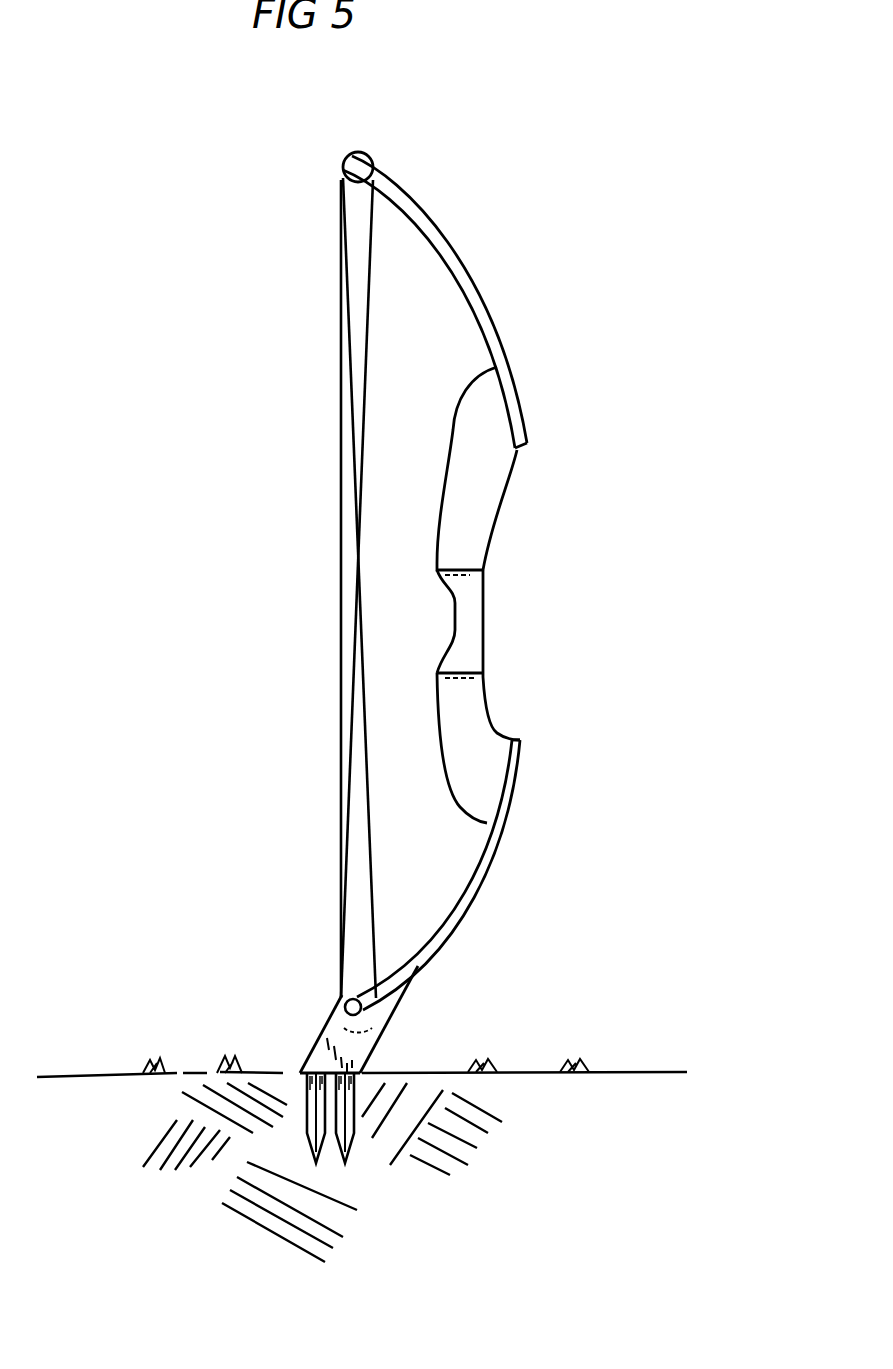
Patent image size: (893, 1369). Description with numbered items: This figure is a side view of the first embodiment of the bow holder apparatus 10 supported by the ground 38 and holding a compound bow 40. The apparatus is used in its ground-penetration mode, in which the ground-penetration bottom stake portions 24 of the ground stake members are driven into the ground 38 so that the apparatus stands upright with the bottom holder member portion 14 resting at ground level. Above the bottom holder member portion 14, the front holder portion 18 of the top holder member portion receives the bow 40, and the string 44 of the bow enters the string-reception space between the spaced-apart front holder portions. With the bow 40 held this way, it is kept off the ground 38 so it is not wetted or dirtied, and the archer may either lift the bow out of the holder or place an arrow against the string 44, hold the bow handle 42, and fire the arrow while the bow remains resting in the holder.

The bow holder apparatus 10 is at (312, 998).
The bottom holder member portion 14 is at (310, 1053).
The front holder portion 18 is at (405, 1003).
The ground-penetration bottom stake portions 24 is at (303, 1135).
The ground 38 is at (428, 1256).
The bow 40 is at (483, 297).
The bow handle 42 is at (473, 630).
The string 44 is at (340, 587).